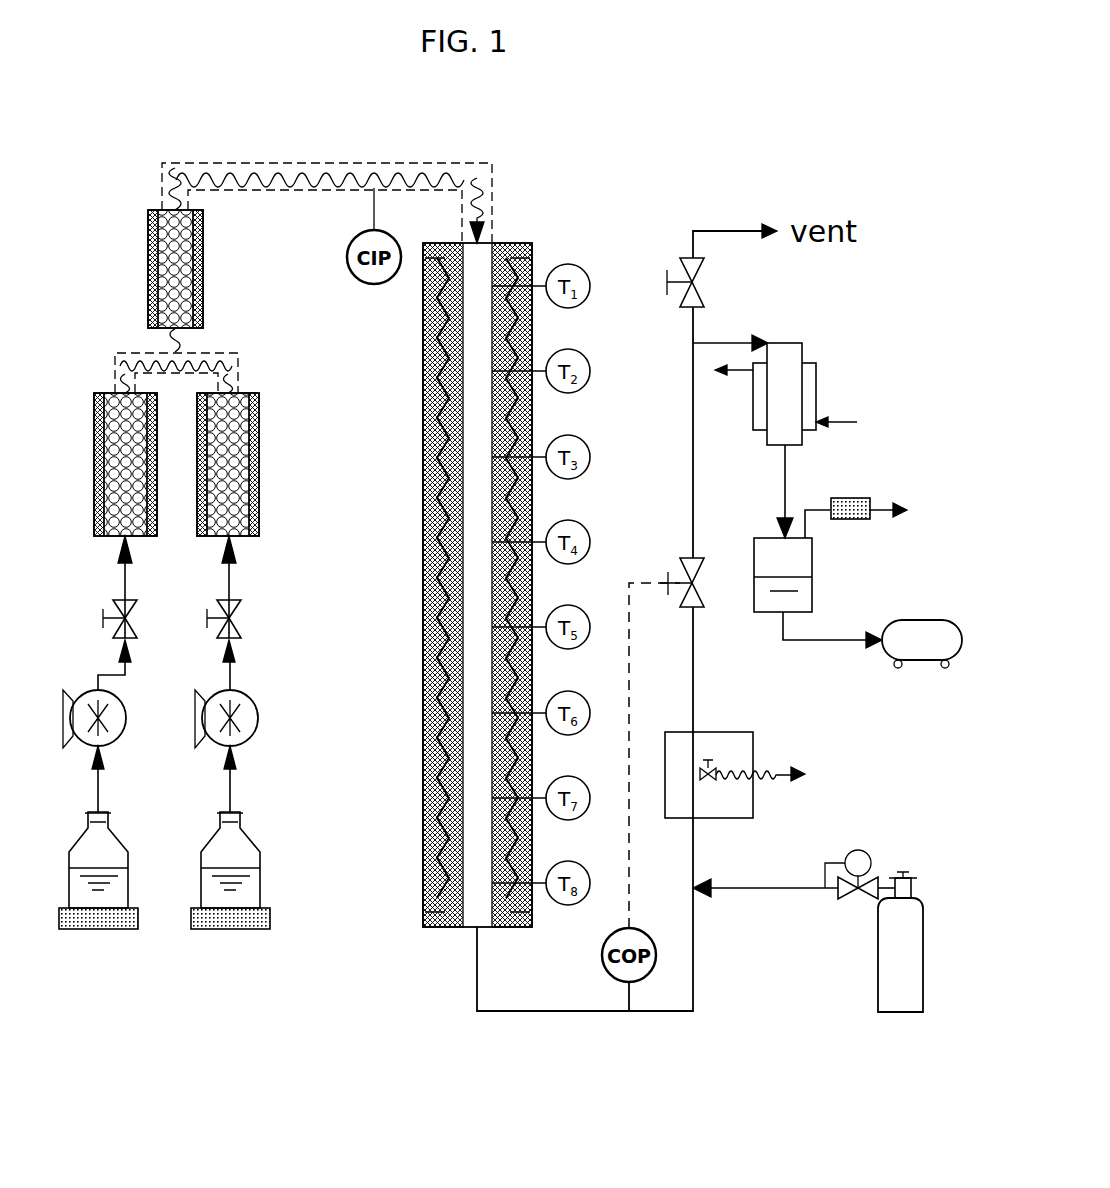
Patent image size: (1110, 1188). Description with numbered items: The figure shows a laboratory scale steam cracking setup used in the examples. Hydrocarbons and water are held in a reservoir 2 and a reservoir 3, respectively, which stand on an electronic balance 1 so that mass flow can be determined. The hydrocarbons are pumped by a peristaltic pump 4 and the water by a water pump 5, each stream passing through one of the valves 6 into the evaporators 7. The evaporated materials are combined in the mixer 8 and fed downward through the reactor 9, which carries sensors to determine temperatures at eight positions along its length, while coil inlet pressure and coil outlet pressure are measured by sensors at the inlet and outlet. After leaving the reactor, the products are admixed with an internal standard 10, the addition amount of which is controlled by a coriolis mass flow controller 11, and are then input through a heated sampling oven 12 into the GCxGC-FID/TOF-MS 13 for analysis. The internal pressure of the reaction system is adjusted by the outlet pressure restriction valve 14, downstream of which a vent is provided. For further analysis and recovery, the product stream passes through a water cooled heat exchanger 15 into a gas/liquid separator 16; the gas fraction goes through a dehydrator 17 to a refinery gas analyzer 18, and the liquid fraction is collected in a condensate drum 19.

The electronic balance 1 is at (164, 929).
The reservoir 2 is at (90, 860).
The reservoir 3 is at (238, 860).
The peristaltic pump 4 is at (98, 739).
The water pump 5 is at (231, 739).
The valves 6 is at (172, 619).
The evaporators 7 is at (176, 464).
The mixer 8 is at (192, 269).
The reactor 9 is at (453, 585).
The internal standard 10 is at (926, 942).
The coriolis mass flow controller 11 is at (840, 896).
The heated sampling oven 12 is at (735, 751).
The GCxGC-FID/TOF-MS 13 is at (866, 758).
The outlet pressure restriction valve 14 is at (670, 568).
The water cooled heat exchanger 15 is at (789, 378).
The gas/liquid separator 16 is at (807, 528).
The dehydrator 17 is at (856, 500).
The refinery gas analyzer 18 is at (942, 532).
The condensate drum 19 is at (872, 640).